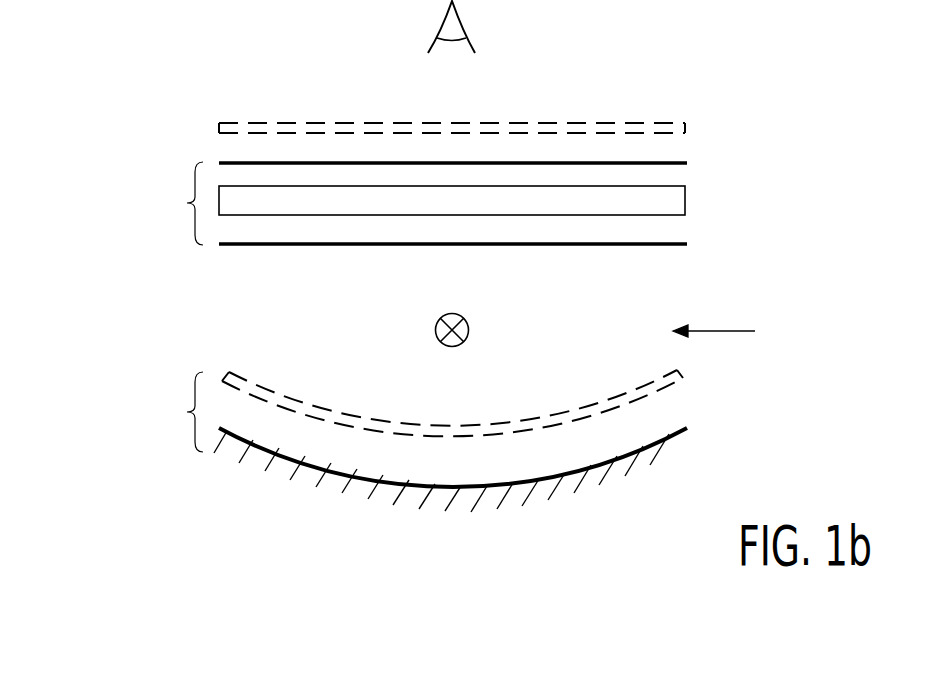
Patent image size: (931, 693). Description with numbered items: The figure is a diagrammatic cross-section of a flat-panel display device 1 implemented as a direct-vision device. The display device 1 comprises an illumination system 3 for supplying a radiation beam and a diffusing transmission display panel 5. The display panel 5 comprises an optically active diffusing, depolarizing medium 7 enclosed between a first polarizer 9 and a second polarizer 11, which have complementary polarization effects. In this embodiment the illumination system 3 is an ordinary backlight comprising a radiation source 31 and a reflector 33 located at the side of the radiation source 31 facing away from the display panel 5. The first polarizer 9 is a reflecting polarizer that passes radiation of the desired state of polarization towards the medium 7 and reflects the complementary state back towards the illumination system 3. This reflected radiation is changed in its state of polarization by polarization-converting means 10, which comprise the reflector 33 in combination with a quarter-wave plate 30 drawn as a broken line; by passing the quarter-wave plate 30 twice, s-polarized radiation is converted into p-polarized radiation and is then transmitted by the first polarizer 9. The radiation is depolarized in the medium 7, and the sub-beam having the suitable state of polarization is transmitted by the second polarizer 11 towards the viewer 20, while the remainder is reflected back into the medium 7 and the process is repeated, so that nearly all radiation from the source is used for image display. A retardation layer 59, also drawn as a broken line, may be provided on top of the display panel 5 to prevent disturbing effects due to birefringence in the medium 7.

The flat-panel display device 1 is at (160, 517).
The illumination system 3 is at (776, 343).
The diffusing transmission display panel 5 is at (177, 203).
The optically active diffusing, depolarizing medium 7 is at (675, 201).
The first polarizer 9 is at (687, 244).
The polarization-converting means 10 is at (177, 411).
The second polarizer 11 is at (687, 163).
The viewer 20 is at (458, 20).
The λ/4 plate 30 is at (689, 373).
The radiation source 31 is at (468, 328).
The reflector 33 is at (687, 428).
The retardation layer 59 is at (689, 124).